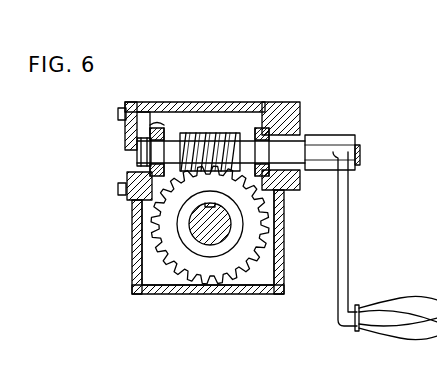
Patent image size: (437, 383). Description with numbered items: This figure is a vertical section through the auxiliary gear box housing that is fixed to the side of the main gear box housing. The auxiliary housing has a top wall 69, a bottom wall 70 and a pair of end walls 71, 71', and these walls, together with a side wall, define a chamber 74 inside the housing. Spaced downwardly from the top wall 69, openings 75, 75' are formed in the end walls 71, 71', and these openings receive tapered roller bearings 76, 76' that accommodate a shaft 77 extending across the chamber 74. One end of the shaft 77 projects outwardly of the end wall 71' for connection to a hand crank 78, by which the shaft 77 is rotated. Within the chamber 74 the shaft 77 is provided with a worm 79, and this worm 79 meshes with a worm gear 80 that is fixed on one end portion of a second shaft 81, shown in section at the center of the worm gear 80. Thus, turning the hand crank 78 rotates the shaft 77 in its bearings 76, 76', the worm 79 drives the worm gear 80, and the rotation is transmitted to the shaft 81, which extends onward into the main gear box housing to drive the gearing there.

The top wall 69 is at (212, 101).
The bottom wall 70 is at (203, 295).
The end wall 71 is at (113, 198).
The end wall 71' is at (293, 198).
The chamber 74 is at (157, 272).
The opening 75 is at (161, 122).
The opening 75' is at (268, 122).
The tapered roller bearing 76 is at (173, 126).
The tapered roller bearing 76' is at (247, 126).
The shaft 77 is at (145, 152).
The hand crank 78 is at (346, 210).
The worm 79 is at (211, 134).
The worm gear 80 is at (166, 225).
The shaft 81 is at (221, 243).